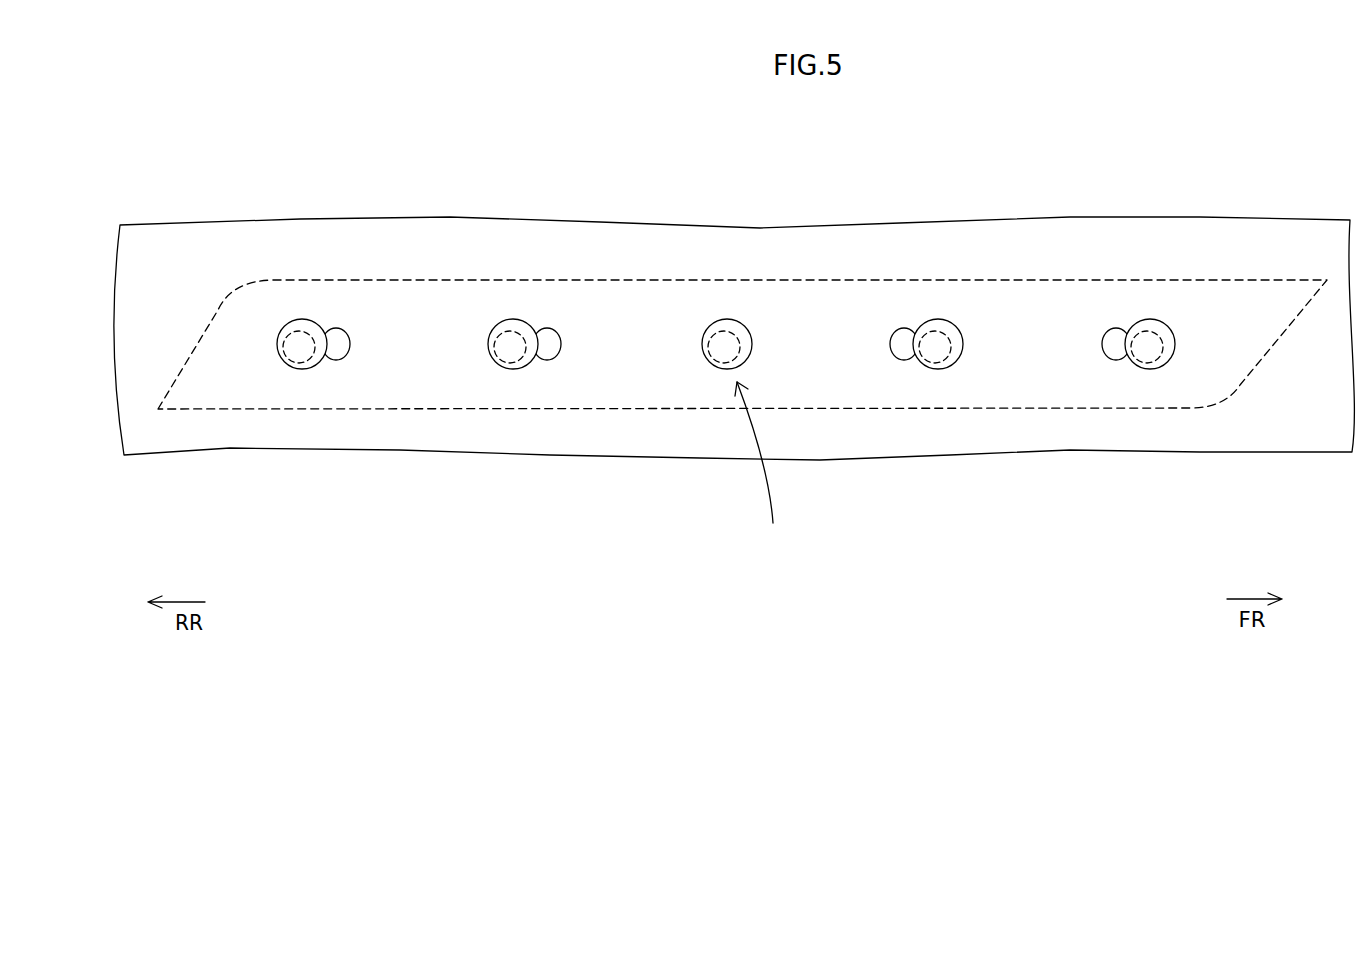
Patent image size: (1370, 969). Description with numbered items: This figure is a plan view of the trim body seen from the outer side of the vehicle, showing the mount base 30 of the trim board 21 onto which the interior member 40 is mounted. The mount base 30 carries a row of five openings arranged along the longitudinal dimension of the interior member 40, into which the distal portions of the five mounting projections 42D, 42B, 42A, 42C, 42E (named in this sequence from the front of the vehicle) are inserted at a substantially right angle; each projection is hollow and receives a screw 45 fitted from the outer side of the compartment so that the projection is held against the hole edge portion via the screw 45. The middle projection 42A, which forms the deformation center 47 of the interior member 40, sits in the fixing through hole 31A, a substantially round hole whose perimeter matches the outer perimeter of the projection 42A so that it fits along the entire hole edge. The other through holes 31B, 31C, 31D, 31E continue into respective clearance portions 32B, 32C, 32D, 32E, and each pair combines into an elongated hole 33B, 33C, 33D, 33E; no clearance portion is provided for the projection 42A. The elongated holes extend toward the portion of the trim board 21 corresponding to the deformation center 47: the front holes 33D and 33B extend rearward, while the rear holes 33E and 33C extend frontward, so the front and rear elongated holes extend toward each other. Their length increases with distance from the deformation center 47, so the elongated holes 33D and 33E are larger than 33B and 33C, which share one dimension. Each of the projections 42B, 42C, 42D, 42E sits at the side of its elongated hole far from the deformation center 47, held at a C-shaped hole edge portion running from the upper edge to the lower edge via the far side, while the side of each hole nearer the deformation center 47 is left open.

The mount base 30 is at (734, 308).
The trim board 21 is at (801, 257).
The interior member 40 is at (622, 409).
The deformation center 47 is at (763, 467).
The screw 45 is at (705, 430).
The mounting projection 42A is at (727, 350).
The mounting projection 42B is at (938, 350).
The mounting projection 42C is at (513, 350).
The mounting projection 42D is at (1150, 350).
The mounting projection 42E is at (302, 350).
The through hole 31A is at (727, 343).
The through hole 31B is at (945, 340).
The through hole 31C is at (518, 340).
The through hole 31D is at (1152, 342).
The through hole 31E is at (303, 340).
The clearance portion 32B is at (914, 330).
The clearance portion 32C is at (543, 329).
The clearance portion 32D is at (1118, 330).
The clearance portion 32E is at (333, 329).
The elongated hole 33B is at (992, 175).
The elongated hole 33C is at (487, 175).
The elongated hole 33D is at (1098, 175).
The elongated hole 33E is at (270, 175).